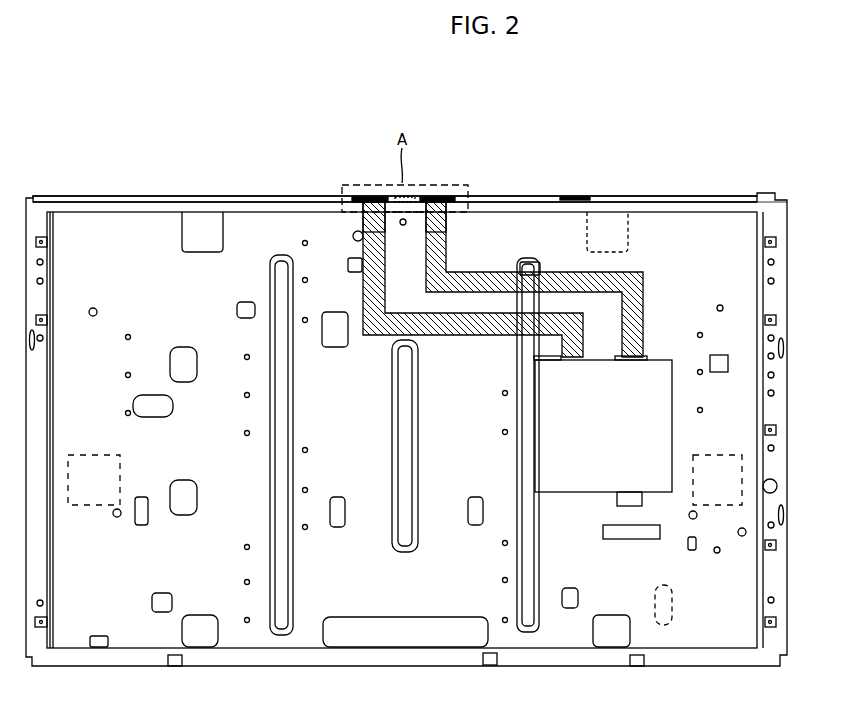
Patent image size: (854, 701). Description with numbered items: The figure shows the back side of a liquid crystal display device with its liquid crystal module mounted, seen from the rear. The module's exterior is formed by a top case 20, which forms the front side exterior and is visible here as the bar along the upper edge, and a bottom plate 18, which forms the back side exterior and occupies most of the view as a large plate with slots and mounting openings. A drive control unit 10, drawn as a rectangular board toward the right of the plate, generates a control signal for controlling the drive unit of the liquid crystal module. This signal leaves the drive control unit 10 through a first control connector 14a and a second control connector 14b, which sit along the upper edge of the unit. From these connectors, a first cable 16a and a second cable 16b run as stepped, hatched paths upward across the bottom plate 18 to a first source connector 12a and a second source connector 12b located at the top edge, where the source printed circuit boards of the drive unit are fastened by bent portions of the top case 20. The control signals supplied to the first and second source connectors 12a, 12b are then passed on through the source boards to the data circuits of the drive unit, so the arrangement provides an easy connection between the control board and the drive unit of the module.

The drive control unit 10 is at (667, 428).
The first source connector 12a is at (355, 195).
The second source connector 12b is at (455, 195).
The first control connector 14a is at (555, 360).
The second control connector 14b is at (643, 357).
The first cable 16a is at (443, 337).
The second cable 16b is at (643, 282).
The bottom plate 18 is at (747, 383).
The top case 20 is at (727, 195).